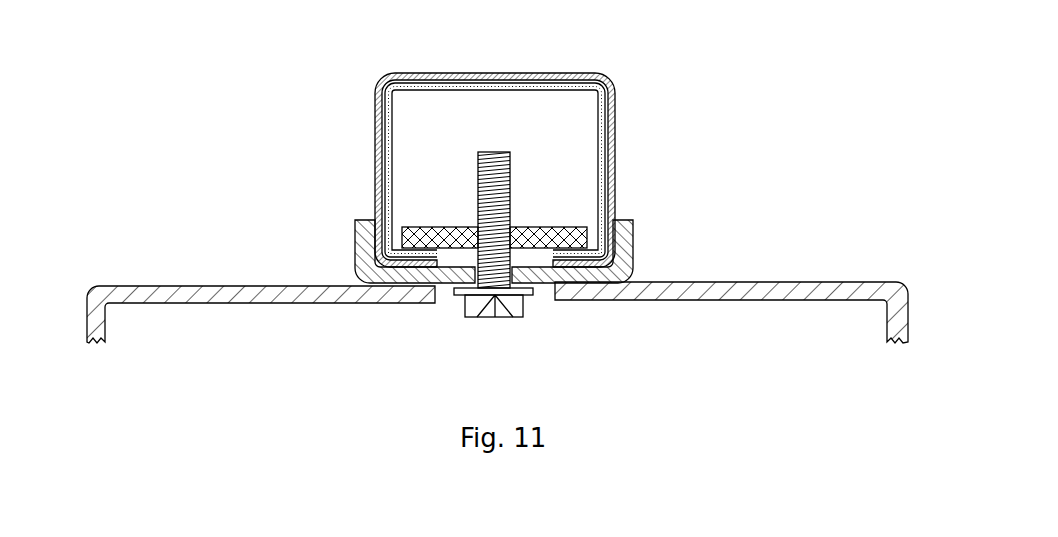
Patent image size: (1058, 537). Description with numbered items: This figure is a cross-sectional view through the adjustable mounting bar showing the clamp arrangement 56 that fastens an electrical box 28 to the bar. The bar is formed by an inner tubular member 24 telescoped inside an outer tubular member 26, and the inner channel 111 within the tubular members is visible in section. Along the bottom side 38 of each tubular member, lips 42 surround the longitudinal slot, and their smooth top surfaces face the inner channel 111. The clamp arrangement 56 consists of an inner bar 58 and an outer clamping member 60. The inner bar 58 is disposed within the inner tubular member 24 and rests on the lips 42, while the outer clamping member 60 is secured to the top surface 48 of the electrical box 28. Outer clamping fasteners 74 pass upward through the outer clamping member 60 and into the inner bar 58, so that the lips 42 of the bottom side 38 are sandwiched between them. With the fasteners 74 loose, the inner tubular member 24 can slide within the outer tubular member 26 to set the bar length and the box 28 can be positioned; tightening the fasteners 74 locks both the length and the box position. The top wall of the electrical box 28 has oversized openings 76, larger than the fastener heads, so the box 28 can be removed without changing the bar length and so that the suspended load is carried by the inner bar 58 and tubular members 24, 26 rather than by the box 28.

The outer tubular member 26 is at (523, 75).
The inner tubular member 24 is at (435, 95).
The inner channel 111 is at (532, 130).
The lips 42 is at (416, 255).
The inner bar 58 is at (571, 233).
The outer clamping member 60 is at (633, 250).
The clamp arrangement 56 is at (660, 196).
The bottom side 38 is at (571, 282).
The top surface 48 is at (192, 274).
The electrical box 28 is at (833, 282).
The oversized openings 76 is at (442, 298).
The outer clamping fasteners 74 is at (497, 317).